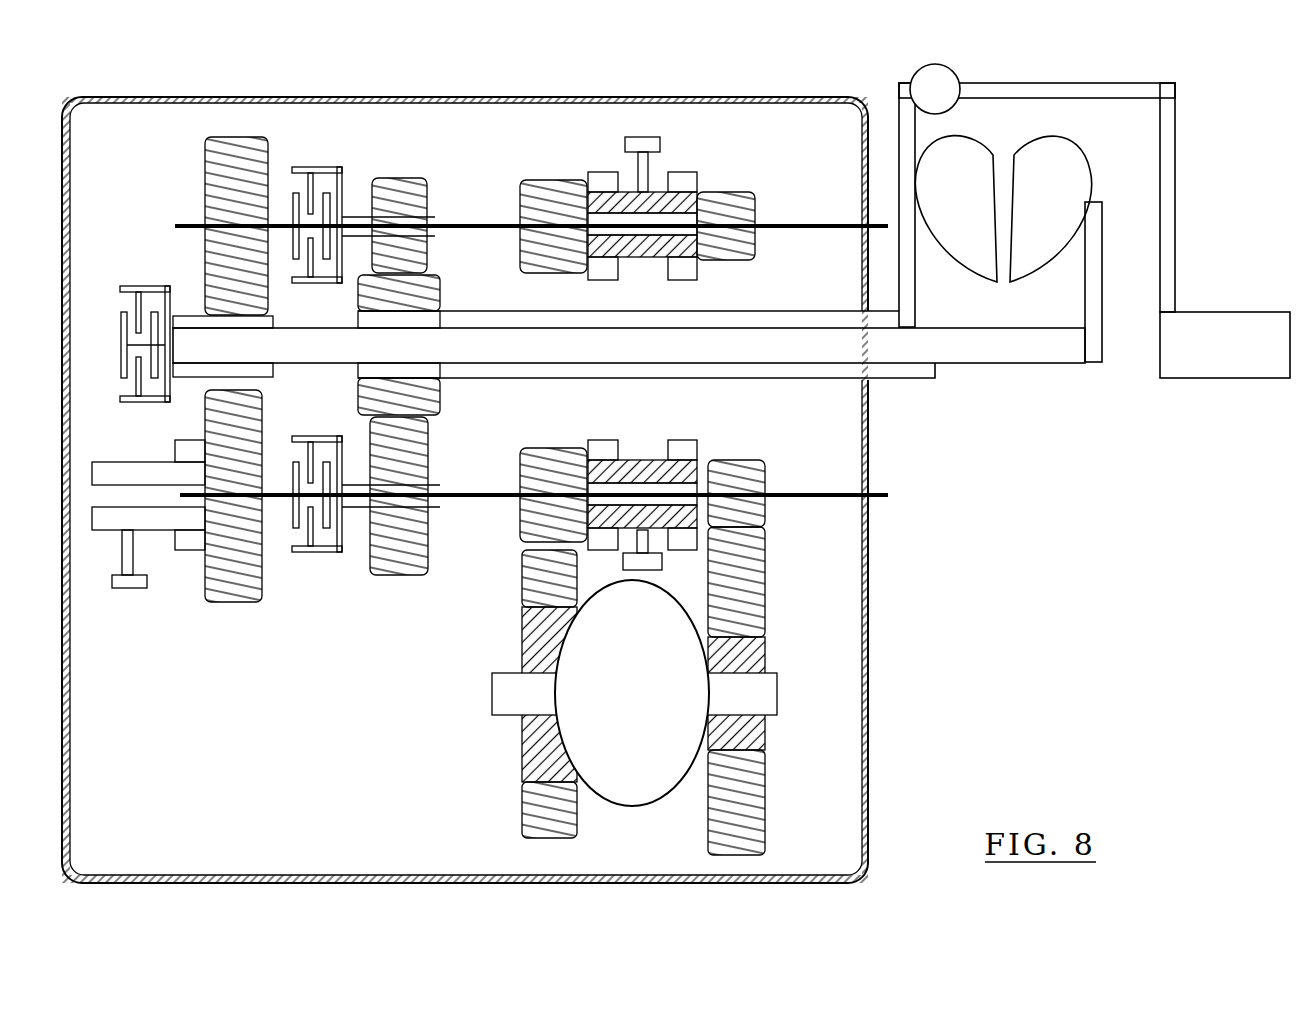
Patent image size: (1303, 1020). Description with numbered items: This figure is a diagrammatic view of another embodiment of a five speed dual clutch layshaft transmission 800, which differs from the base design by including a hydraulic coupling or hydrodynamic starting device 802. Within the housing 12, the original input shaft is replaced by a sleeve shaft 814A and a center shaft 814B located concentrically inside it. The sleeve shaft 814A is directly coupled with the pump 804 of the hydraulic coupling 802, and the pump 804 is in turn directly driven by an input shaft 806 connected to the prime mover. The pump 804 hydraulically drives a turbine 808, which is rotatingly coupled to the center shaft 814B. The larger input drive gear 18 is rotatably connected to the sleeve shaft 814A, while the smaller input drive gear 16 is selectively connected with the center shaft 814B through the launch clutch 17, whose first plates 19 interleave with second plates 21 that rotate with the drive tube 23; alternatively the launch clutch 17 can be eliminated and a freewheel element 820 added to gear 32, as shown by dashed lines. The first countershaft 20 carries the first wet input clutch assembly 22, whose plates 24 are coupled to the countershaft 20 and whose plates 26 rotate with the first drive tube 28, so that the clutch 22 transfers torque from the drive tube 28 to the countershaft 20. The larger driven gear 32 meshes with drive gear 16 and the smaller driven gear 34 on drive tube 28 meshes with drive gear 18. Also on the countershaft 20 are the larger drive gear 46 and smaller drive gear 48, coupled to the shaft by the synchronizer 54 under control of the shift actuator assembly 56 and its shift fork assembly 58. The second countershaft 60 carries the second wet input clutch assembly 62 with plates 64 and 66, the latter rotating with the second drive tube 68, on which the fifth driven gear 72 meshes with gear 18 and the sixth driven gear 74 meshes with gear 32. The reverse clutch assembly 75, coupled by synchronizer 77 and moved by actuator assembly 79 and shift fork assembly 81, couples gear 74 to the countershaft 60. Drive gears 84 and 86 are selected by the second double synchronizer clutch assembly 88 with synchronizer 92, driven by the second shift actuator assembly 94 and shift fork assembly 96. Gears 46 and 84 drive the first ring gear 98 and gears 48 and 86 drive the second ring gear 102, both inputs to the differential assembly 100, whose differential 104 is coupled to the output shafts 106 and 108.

The housing 12 is at (800, 97).
The first, smaller input drive gear 16 is at (270, 370).
The launch clutch 17 is at (132, 286).
The second, larger input drive gear 18 is at (440, 395).
The first plurality of clutch plates or discs 19 is at (121, 320).
The first layshaft or countershaft 20 is at (828, 226).
The second plurality of clutch plates or discs 21 is at (135, 384).
The first wet input clutch assembly 22 is at (318, 150).
The quill or drive tube 23 is at (175, 316).
The first plurality of clutch plates or discs 24 is at (330, 200).
The second plurality of clutch plates or discs 26 is at (310, 178).
The first quill or drive tube 28 is at (400, 210).
The first, larger driven gear 32 is at (206, 148).
The second, smaller driven gear 34 is at (418, 178).
The third, larger drive gear 46 is at (540, 180).
The fourth, smaller drive gear 48 is at (735, 192).
The first interengaging synchronizer 54 is at (655, 260).
The first shift actuator assembly 56 is at (617, 139).
The output member and shift fork assembly 58 is at (630, 170).
The second layshaft or countershaft 60 is at (820, 496).
The second wet input clutch assembly 62 is at (312, 572).
The first plurality of clutch plates or discs 64 is at (295, 530).
The second plurality of clutch plates or discs 66 is at (333, 548).
The second quill or drive tube 68 is at (365, 490).
The fifth driven gear 72 is at (383, 576).
The sixth driven gear 74 is at (205, 590).
The reverse dog clutch or single sided synchronizer clutch assembly 75 is at (113, 550).
The synchronizer 77 is at (185, 495).
The shift actuator assembly 79 is at (128, 604).
The output member and shift fork assembly 81 is at (135, 576).
The seventh, larger drive gear 84 is at (548, 448).
The eighth, smaller drive gear 86 is at (740, 460).
The second double synchronizer clutch assembly 88 is at (676, 420).
The synchronizer 92 is at (648, 470).
The second shift actuator assembly 94 is at (680, 565).
The output member and shift fork assembly 96 is at (620, 560).
The first output or ring gear 98 is at (522, 750).
The differential assembly 100 is at (672, 806).
The second output or ring gear 102 is at (765, 742).
The differential 104 is at (620, 807).
The axle or output shaft 106 is at (492, 693).
The axle or output shaft 108 is at (777, 693).
The five speed dual clutch transmission 800 is at (1220, 166).
The hydraulic coupling or hydrodynamic starting device 802 is at (1143, 72).
The pump 804 is at (1112, 98).
The input shaft 806 is at (1230, 312).
The turbine 808 is at (1048, 327).
The sleeve shaft 814A is at (815, 378).
The center shaft 814B is at (765, 340).
The freewheel element 820 is at (262, 255).